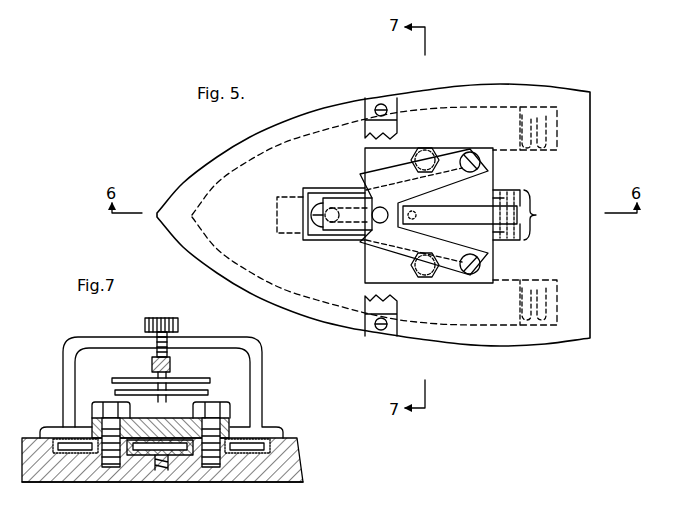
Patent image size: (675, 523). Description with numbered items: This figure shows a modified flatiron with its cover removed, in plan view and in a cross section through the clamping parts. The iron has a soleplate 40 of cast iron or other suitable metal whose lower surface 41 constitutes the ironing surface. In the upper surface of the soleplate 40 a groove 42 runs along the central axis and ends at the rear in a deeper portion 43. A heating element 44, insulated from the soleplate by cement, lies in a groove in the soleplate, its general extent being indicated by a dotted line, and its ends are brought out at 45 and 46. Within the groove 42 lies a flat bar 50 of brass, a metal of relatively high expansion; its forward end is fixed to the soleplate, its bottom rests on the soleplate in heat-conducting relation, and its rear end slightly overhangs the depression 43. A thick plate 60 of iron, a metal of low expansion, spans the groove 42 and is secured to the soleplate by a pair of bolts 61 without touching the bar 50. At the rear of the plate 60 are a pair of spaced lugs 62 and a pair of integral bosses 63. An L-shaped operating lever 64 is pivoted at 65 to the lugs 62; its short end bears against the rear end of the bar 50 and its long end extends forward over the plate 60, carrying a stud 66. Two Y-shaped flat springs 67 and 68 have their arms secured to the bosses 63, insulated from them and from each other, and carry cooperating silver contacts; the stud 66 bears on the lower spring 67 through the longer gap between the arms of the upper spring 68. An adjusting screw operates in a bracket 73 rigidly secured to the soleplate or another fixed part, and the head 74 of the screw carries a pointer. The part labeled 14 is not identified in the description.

In FIG. 7, the sole plate 14 is at (283, 440).
In FIG. 5, the soleplate 40 is at (228, 270).
In FIG. 7, the soleplate 40 is at (300, 458).
In FIG. 7, the ironing surface 41 is at (253, 482).
In FIG. 5, the groove 42 is at (318, 188).
In FIG. 5, the deeper portion 43 is at (530, 238).
In FIG. 5, the heating element 44 is at (254, 184).
In FIG. 5, the heating element end 45 is at (560, 106).
In FIG. 5, the heating element end 46 is at (560, 327).
In FIG. 5, the flat bar 50 is at (350, 198).
In FIG. 7, the flat bar 50 is at (142, 456).
In FIG. 5, the plate 60 is at (395, 150).
In FIG. 7, the plate 60 is at (177, 420).
In FIG. 5, the bolts 61 is at (430, 155).
In FIG. 7, the bolts 61 is at (99, 402).
In FIG. 5, the lugs 62 is at (482, 215).
In FIG. 5, the bosses 63 is at (490, 148).
In FIG. 5, the L shaped operating lever 64 is at (472, 225).
In FIG. 5, the pivot 65 is at (505, 197).
In FIG. 7, the stud 66 is at (92, 428).
In FIG. 5, the lower Y-shaped flat spring 67 is at (405, 230).
In FIG. 7, the lower Y-shaped flat spring 67 is at (206, 392).
In FIG. 5, the upper Y-shaped flat spring 68 is at (350, 218).
In FIG. 7, the upper Y-shaped flat spring 68 is at (195, 375).
In FIG. 7, the bracket 73 is at (201, 343).
In FIG. 7, the head of adjusting screw 74 is at (145, 323).